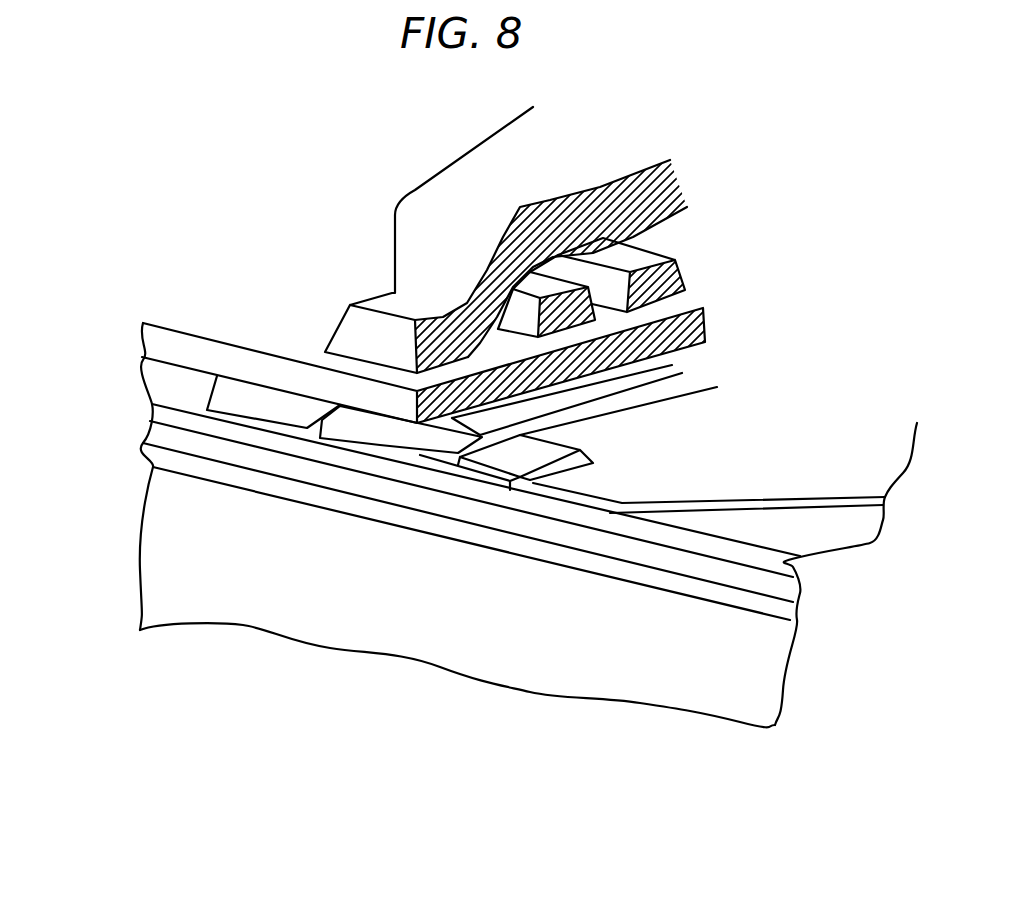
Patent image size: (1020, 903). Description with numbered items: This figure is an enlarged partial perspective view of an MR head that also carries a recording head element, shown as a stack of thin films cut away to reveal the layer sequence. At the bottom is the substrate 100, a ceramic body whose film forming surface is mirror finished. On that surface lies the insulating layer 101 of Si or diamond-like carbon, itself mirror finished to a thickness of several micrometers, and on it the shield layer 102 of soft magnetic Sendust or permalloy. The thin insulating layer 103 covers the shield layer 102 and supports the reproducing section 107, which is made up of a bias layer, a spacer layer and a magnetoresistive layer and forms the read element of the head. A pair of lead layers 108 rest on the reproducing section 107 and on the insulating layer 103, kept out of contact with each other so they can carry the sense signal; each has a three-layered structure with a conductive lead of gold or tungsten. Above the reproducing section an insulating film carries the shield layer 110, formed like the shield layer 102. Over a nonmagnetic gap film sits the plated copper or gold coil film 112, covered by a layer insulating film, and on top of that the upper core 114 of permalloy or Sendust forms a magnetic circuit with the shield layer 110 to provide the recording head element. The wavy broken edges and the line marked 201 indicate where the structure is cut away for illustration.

The substrate 100 is at (762, 668).
The insulating layer 101 is at (790, 612).
The shield layer 102 is at (152, 437).
The insulating layer 103 is at (787, 568).
The reproducing section 107 is at (416, 457).
The lead layers 108 is at (218, 380).
The shield layer 110 is at (143, 340).
The coil film 112 is at (628, 255).
The upper core 114 is at (410, 263).
The cut line 201 is at (446, 662).